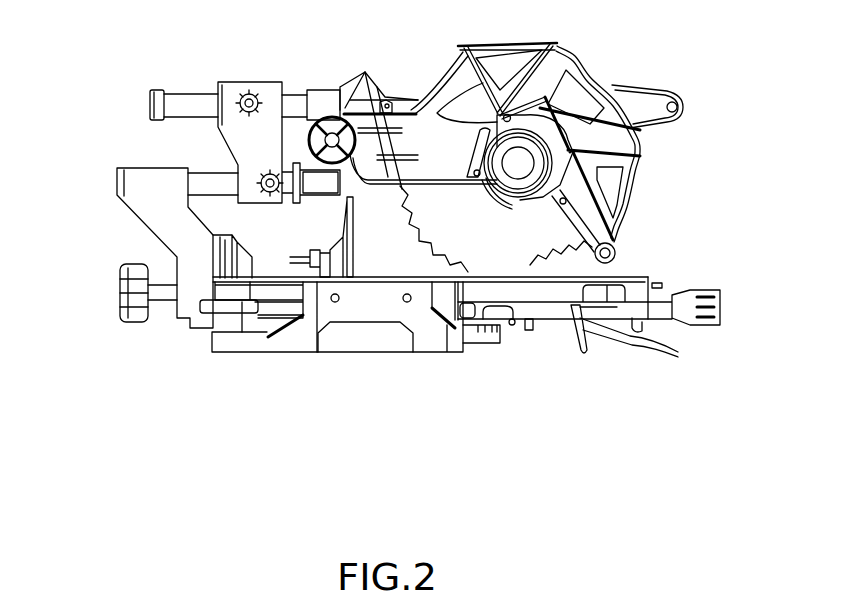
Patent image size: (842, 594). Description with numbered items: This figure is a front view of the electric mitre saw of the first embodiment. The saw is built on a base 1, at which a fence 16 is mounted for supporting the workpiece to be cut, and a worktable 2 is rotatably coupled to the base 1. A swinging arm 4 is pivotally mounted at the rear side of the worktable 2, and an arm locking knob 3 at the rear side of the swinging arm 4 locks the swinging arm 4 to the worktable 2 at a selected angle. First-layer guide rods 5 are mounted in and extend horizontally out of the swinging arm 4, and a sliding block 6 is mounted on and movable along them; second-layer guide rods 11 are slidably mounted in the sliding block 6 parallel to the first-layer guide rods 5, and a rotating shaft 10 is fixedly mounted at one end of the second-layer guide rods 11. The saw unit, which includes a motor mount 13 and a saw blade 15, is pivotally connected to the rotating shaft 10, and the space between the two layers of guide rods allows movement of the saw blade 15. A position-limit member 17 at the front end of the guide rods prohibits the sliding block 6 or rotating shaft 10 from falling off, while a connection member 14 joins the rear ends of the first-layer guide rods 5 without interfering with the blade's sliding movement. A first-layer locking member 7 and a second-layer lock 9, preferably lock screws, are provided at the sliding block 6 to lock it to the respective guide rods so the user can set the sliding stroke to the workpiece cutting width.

The base 1 is at (365, 303).
The worktable 2 is at (515, 292).
The arm locking knob 3 is at (124, 292).
The swinging arm 4 is at (163, 211).
The first-layer guide rods 5 is at (210, 187).
The sliding block 6 is at (264, 143).
The first-layer locking member 7 is at (272, 173).
The second-layer lock 9 is at (247, 95).
The rotating shaft 10 is at (325, 110).
The second-layer guide rods 11 is at (188, 103).
The motor mount 13 is at (431, 138).
The connection member 14 is at (154, 104).
The saw blade 15 is at (537, 236).
The fence 16 is at (342, 253).
The position-limit member 17 is at (365, 72).